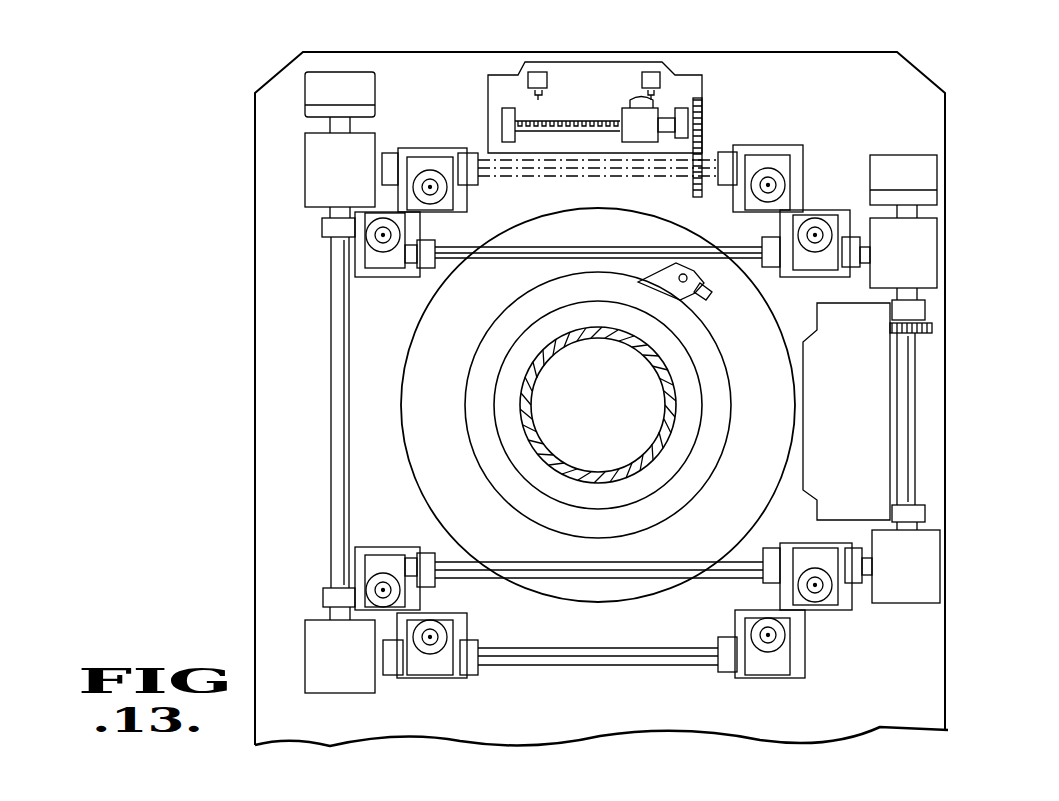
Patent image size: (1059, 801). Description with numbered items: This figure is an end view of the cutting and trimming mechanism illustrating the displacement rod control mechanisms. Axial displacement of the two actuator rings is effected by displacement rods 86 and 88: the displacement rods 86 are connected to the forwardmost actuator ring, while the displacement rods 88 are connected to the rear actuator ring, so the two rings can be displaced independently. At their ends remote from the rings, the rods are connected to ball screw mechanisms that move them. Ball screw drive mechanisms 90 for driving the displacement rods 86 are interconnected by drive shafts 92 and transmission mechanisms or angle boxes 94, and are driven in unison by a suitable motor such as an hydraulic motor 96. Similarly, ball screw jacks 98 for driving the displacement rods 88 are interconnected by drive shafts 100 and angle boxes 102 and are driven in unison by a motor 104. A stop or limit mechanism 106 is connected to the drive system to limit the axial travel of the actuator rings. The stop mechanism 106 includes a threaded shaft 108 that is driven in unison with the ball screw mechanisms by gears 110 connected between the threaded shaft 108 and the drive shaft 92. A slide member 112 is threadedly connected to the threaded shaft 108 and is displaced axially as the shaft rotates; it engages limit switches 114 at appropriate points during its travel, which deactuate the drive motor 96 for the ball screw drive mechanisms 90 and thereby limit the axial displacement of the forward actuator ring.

The displacement rod 86 is at (430, 185).
The displacement rod 88 is at (383, 245).
The ball screw drive mechanism 90 is at (438, 148).
The drive shaft 92 is at (538, 172).
The angle box 94 is at (305, 163).
The hydraulic motor 96 is at (377, 80).
The ball screw jack 98 is at (403, 270).
The drive shaft 100 is at (515, 258).
The angle box 102 is at (918, 264).
The motor 104 is at (918, 156).
The stop mechanism 106 is at (575, 62).
The threaded shaft 108 is at (600, 120).
The gear 110 is at (702, 152).
The slide member 112 is at (663, 108).
The limit switch 114 is at (538, 72).